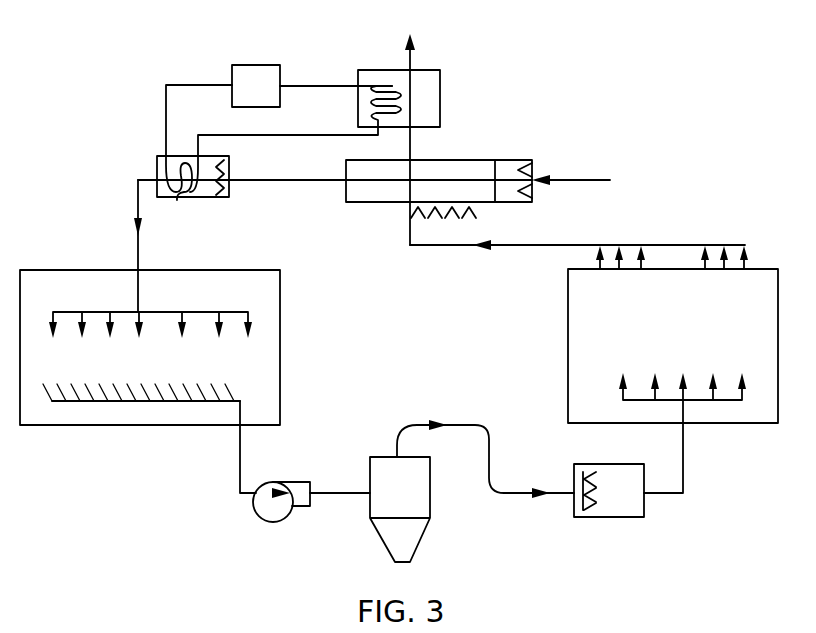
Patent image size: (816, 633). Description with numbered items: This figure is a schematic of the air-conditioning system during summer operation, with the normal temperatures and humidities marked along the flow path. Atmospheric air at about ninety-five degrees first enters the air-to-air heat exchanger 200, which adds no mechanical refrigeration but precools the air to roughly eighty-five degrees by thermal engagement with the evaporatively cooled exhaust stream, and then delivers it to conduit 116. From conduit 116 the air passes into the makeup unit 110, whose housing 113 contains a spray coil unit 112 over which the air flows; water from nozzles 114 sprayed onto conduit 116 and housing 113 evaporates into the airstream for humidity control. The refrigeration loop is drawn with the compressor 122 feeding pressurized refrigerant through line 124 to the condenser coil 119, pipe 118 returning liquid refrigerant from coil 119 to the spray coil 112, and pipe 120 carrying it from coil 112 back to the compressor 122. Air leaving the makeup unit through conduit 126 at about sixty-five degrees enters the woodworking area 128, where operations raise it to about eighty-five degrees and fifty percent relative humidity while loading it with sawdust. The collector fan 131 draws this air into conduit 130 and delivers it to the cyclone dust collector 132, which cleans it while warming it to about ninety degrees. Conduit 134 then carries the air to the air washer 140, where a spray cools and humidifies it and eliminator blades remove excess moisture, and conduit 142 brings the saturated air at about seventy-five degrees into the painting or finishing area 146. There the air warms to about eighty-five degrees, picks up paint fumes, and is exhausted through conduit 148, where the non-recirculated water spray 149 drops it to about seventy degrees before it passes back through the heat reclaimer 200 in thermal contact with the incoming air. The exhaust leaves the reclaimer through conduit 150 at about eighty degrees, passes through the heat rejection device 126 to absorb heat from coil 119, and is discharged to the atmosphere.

The makeup unit 110 is at (160, 99).
The spray coil unit 112 is at (177, 200).
The housing 113 is at (160, 173).
The nozzles 114 is at (228, 190).
The conduit 116 is at (270, 182).
The pipe 118 is at (322, 135).
The condenser coil 119 is at (368, 103).
The pipe 120 is at (215, 85).
The compressor 122 is at (247, 66).
The duct section 124 is at (306, 86).
The heat rejection device 126 is at (397, 80).
The woodworking area 128 is at (218, 302).
The conduit 130 is at (240, 447).
The collector fan 131 is at (258, 512).
The cyclone dust collector 132 is at (408, 538).
The conduit 134 is at (560, 495).
The air washer 140 is at (598, 485).
The conduit 142 is at (683, 438).
The painting or finishing area 146 is at (688, 309).
The conduit 148 is at (545, 247).
The water spray 149 is at (458, 228).
The conduit 150 is at (440, 127).
The heat exchanger 200 is at (466, 165).